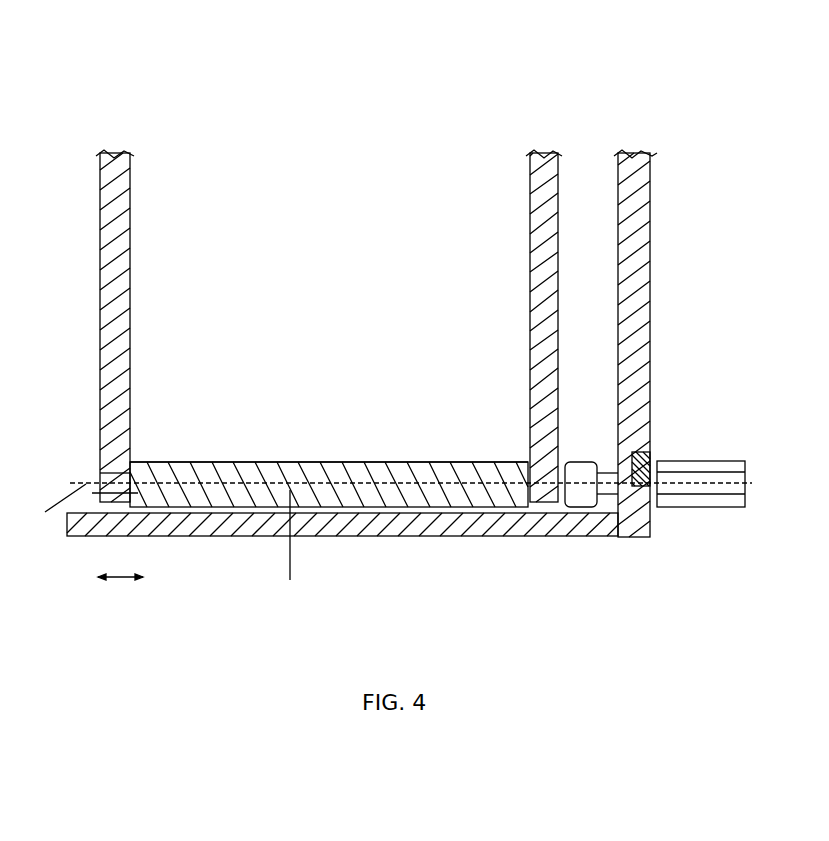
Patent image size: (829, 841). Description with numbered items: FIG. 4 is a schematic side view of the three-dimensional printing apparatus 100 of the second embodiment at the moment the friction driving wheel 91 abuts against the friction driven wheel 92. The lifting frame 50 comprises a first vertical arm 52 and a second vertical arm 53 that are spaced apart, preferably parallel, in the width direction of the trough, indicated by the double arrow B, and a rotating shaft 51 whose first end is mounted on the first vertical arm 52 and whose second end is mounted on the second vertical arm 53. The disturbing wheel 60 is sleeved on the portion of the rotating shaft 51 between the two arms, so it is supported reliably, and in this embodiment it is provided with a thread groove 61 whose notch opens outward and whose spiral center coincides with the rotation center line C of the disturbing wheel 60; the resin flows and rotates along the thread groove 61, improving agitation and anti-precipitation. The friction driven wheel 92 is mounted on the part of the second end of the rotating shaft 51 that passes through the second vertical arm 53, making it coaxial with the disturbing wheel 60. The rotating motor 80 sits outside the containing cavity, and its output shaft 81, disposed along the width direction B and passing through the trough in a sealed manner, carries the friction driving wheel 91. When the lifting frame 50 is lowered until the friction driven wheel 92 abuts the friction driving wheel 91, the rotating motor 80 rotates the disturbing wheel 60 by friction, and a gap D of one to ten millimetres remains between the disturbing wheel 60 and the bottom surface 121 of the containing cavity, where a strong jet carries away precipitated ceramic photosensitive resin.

The 3D printing apparatus 100 is at (126, 48).
The lifting frame 50 is at (50, 374).
The rotating shaft 51 is at (118, 496).
The first vertical arm 52 is at (103, 389).
The second vertical arm 53 is at (530, 300).
The disturbing wheel 60 is at (263, 466).
The thread groove 61 is at (165, 459).
The bottom surface of the containing cavity 121 is at (417, 514).
The friction driven wheel 92 is at (570, 507).
The friction driving wheel 91 is at (648, 526).
The output shaft 81 is at (633, 478).
The rotating motor 80 is at (712, 461).
The gap D is at (289, 535).
The width direction of the trough B is at (120, 581).
The rotation center line C is at (54, 499).